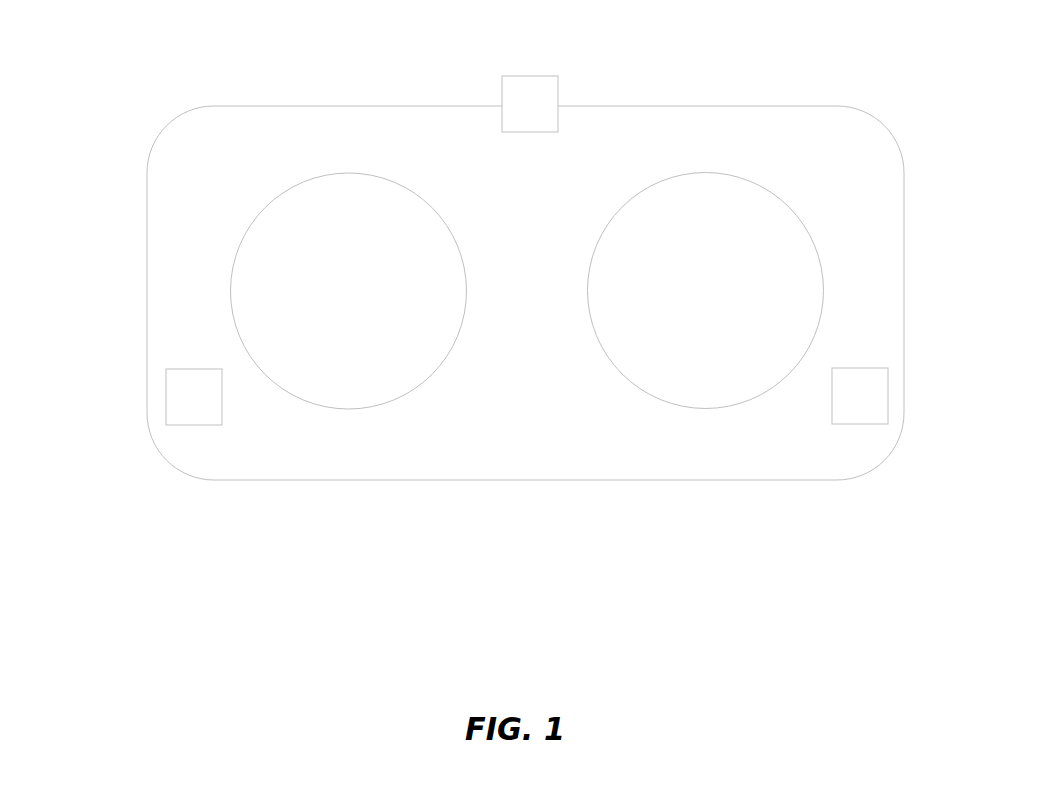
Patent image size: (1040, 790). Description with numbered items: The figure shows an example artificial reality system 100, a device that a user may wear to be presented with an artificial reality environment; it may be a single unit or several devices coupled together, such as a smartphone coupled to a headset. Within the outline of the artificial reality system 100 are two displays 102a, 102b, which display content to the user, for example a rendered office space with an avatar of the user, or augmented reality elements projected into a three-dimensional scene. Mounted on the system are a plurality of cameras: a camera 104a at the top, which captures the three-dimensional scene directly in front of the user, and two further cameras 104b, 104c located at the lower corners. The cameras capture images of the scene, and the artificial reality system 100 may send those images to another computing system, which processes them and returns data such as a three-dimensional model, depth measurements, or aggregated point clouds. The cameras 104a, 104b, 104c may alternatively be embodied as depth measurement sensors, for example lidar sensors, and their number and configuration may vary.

The artificial reality system 100 is at (170, 128).
The display 102a is at (278, 195).
The display 102b is at (635, 197).
The camera 104a is at (531, 76).
The camera 104b is at (166, 388).
The camera 104c is at (888, 388).